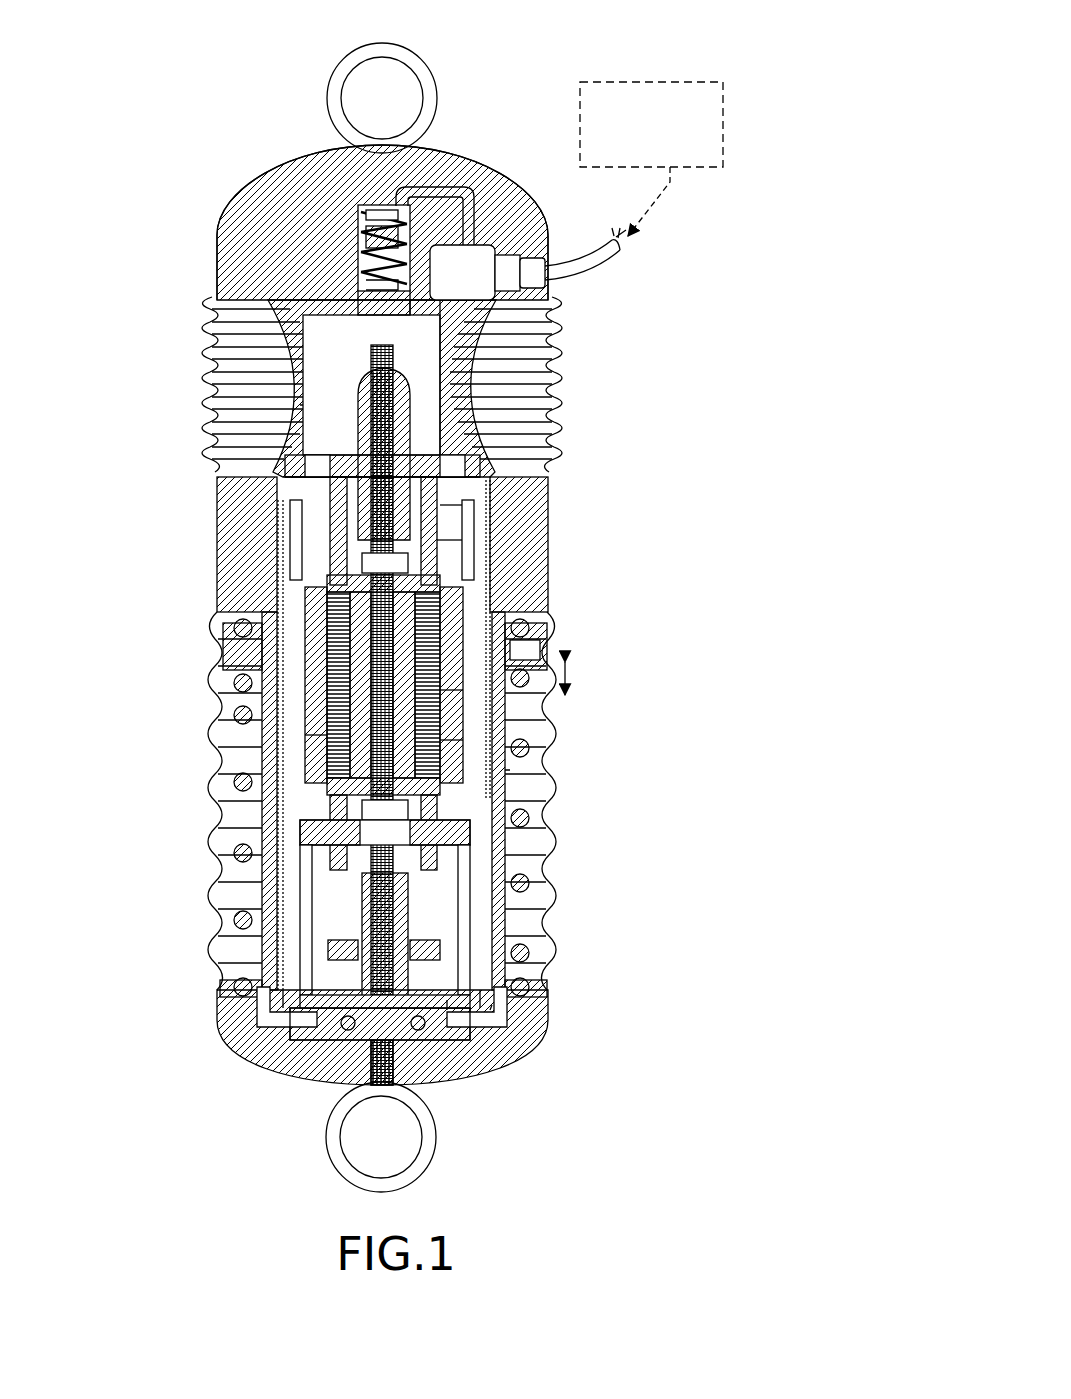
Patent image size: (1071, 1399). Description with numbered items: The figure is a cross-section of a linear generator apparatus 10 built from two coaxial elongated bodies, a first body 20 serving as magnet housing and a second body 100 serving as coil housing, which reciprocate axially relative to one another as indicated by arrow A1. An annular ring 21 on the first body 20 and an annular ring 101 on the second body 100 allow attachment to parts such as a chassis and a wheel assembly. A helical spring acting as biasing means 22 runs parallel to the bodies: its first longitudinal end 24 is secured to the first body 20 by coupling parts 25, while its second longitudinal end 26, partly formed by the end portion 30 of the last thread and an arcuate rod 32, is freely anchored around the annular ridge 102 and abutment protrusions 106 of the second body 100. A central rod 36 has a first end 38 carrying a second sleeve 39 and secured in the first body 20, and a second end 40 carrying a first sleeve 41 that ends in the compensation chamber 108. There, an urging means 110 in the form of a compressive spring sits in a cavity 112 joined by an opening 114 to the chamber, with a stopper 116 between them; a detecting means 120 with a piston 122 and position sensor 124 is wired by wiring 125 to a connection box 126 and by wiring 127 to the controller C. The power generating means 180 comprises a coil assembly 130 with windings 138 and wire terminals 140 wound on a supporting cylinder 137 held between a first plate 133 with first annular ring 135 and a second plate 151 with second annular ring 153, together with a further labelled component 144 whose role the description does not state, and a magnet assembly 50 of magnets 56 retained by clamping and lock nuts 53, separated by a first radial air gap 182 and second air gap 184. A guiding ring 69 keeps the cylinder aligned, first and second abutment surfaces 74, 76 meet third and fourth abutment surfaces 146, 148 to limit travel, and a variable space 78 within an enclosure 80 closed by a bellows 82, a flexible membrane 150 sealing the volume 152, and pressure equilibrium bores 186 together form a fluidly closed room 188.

The linear generator apparatus 10 is at (205, 100).
The first body 20 is at (550, 1042).
The annular ring 21 is at (432, 1170).
The biasing means 22 is at (270, 792).
The first longitudinal end 24 is at (262, 1012).
The coupling parts 25 is at (240, 967).
The second longitudinal end 26 is at (258, 704).
The end portion 30 is at (235, 692).
The arcuate rod 32 is at (268, 622).
The central rod 36 is at (300, 887).
The first end 38 is at (375, 1062).
The second sleeve 39 is at (300, 1008).
The second end 40 is at (370, 376).
The first sleeve 41 is at (445, 492).
The magnet assembly 50 is at (470, 562).
The clamping and lock nuts 53 is at (412, 838).
The magnets 56 is at (350, 762).
The guiding ring 69 is at (482, 882).
The first abutment surface 74 is at (300, 545).
The second abutment surface 76 is at (330, 737).
The variable space 78 is at (300, 817).
The enclosure 80 is at (245, 920).
The bellows 82 is at (300, 857).
The second body 100 is at (485, 150).
The annular ring 101 is at (425, 62).
The annular ridge 102 is at (240, 642).
The abutment protrusions 106 is at (522, 644).
The compensation chamber 108 is at (470, 378).
The urging means 110 is at (378, 232).
The cavity 112 is at (368, 262).
The opening 114 is at (395, 316).
The stopper 116 is at (400, 312).
The detecting means 120 is at (378, 215).
The piston 122 is at (375, 285).
The position sensor 124 is at (370, 240).
The wiring 125 is at (430, 190).
The connection box 126 is at (482, 258).
The wiring 127 is at (628, 248).
The coil assembly 130 is at (455, 742).
The first plate 133 is at (285, 491).
The first annular ring 135 is at (470, 468).
The supporting cylinder 137 is at (283, 508).
The windings 138 is at (465, 692).
The wire terminal 140 is at (437, 542).
The inner tube 144 is at (330, 522).
The third abutment surface 146 is at (450, 507).
The fourth abutment surface 148 is at (450, 792).
The flexible membrane 150 is at (232, 306).
The second plate 151 is at (300, 937).
The volume 152 is at (248, 395).
The second annular ring 153 is at (448, 1002).
The power generating means 180 is at (330, 592).
The first radial air gap 182 is at (425, 602).
The second air gap 184 is at (425, 812).
The pressure equilibrium bores 186 is at (290, 440).
The fluidly closed room 188 is at (300, 407).
The arrow A1 is at (601, 677).
The controller C is at (580, 118).